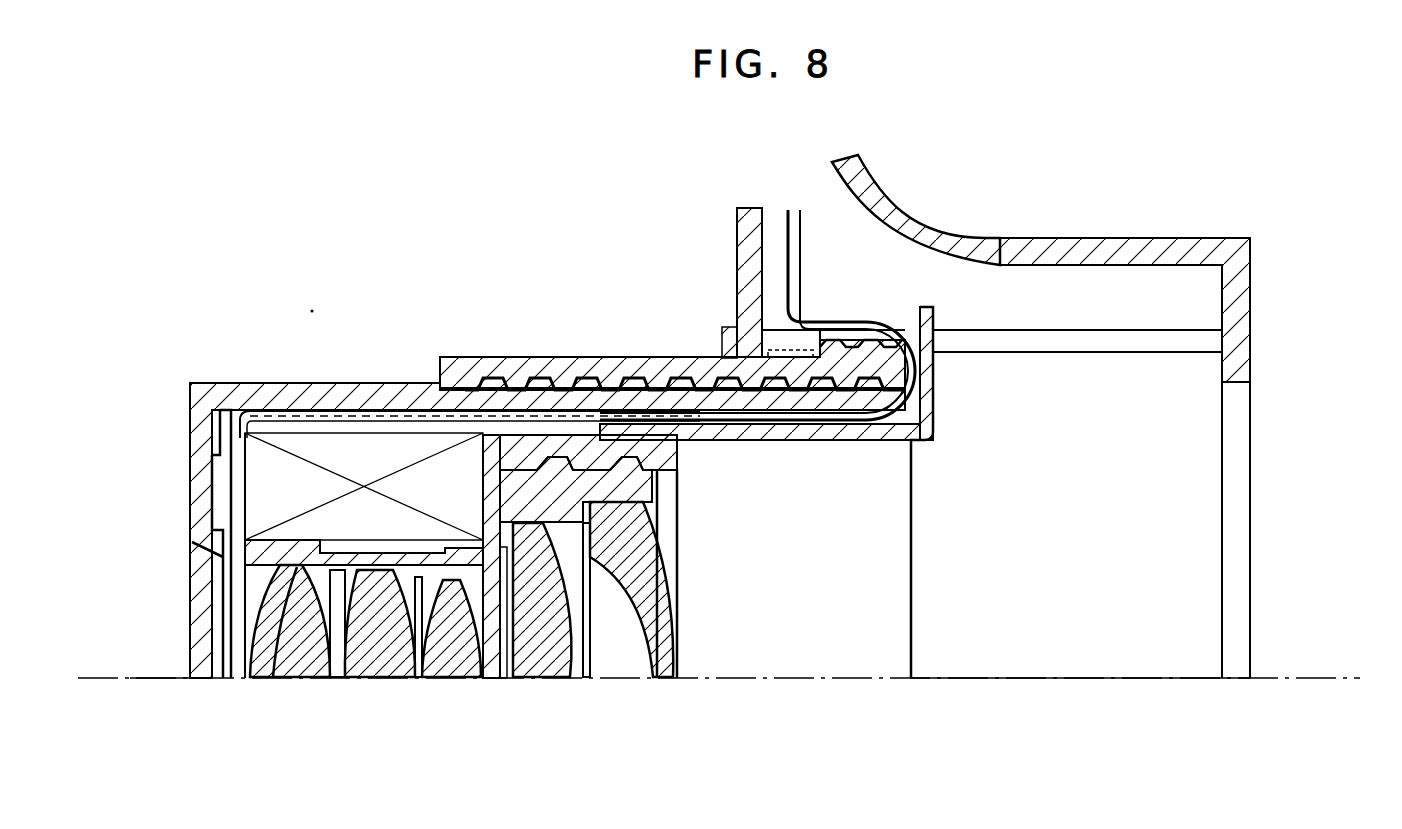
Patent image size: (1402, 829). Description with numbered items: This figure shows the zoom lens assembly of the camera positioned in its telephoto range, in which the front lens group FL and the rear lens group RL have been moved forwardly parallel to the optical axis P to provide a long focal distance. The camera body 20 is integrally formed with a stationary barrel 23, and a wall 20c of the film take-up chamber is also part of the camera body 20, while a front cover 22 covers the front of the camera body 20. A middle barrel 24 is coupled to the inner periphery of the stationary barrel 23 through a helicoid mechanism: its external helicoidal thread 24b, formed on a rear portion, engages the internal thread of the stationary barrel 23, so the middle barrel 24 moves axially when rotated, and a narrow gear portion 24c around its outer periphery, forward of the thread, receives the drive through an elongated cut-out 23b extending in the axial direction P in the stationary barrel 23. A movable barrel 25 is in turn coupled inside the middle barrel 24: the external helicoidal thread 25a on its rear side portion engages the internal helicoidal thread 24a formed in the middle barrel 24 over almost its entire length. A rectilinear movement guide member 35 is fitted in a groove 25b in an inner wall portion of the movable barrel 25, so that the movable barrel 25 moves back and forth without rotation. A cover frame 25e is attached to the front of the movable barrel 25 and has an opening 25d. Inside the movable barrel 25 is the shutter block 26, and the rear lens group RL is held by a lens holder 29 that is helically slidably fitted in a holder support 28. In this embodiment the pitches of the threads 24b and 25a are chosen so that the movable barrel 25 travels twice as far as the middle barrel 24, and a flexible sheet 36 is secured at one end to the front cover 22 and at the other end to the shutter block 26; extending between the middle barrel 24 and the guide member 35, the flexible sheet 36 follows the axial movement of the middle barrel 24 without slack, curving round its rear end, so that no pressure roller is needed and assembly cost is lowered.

The camera body 20 is at (1255, 325).
The wall of a film take-up chamber 20c is at (990, 240).
The front cover 22 is at (748, 212).
The stationary barrel 23 is at (1041, 664).
The elongated cut-out 23b is at (1074, 344).
The middle barrel 24 is at (486, 370).
The internal helicoidal thread 24a is at (757, 437).
The external helicoidal thread 24b is at (862, 346).
The narrow gear portion 24c is at (725, 308).
The movable barrel 25 is at (376, 393).
The external helicoidal thread 25a is at (633, 386).
The groove 25b is at (387, 423).
The opening 25d is at (200, 560).
The cover frame 25e is at (218, 435).
The shutter block 26 is at (260, 490).
The holder support 28 is at (667, 457).
The lens holder 29 is at (650, 490).
The rectilinear movement guide member 35 is at (938, 441).
The flexible sheet 36 is at (860, 441).
The front lens group FL is at (484, 686).
The rear lens group RL is at (675, 686).
The optical axis P is at (160, 684).